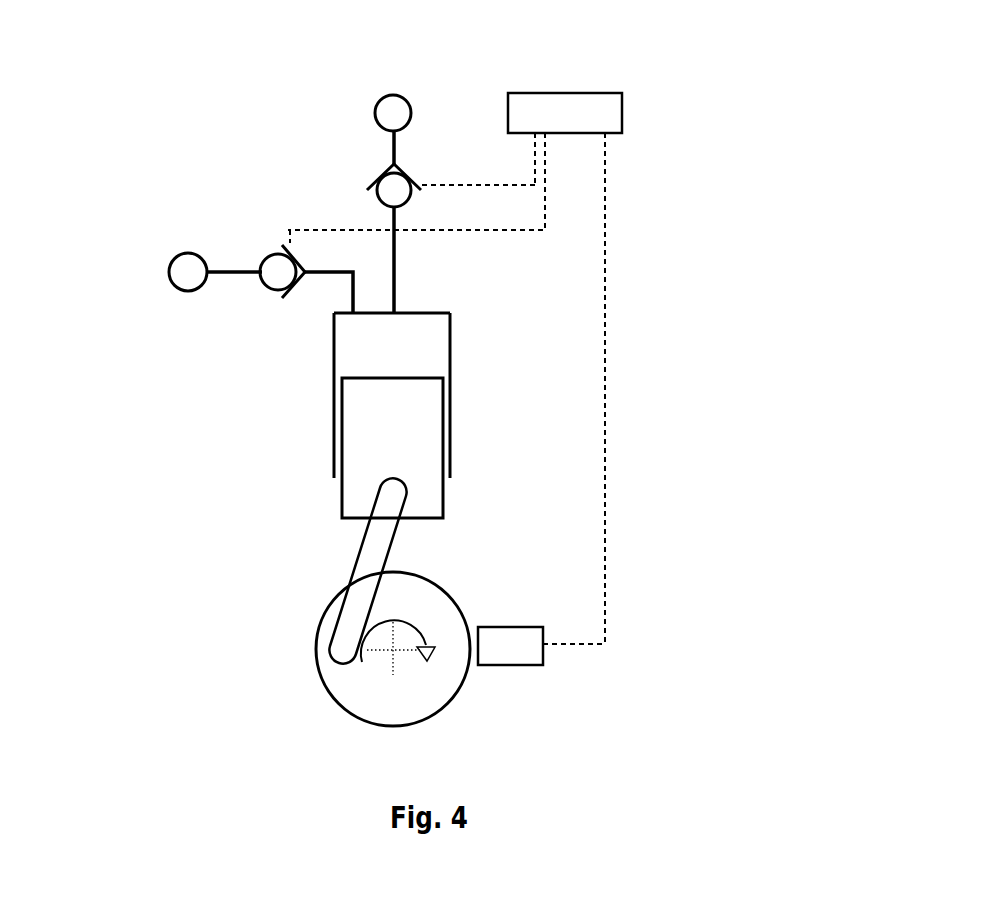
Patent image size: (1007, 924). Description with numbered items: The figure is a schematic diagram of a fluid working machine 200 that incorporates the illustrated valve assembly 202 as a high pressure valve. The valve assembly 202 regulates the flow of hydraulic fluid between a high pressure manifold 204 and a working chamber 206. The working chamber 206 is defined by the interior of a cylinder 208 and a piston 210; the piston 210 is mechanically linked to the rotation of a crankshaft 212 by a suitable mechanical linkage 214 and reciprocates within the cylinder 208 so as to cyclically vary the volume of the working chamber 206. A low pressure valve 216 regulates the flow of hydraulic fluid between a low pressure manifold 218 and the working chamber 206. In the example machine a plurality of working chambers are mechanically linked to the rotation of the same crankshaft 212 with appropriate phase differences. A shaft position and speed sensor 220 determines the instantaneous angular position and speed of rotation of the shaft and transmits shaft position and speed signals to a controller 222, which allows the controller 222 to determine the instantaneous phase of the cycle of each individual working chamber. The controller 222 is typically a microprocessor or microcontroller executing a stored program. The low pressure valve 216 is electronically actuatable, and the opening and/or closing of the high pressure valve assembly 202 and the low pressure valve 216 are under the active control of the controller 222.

The fluid working machine 200 is at (103, 85).
The valve assembly 202 is at (265, 258).
The high pressure manifold 204 is at (187, 272).
The working chamber 206 is at (405, 338).
The cylinder 208 is at (333, 340).
The piston 210 is at (358, 440).
The crankshaft 212 is at (342, 675).
The mechanical linkage 214 is at (363, 553).
The low pressure valve 216 is at (377, 182).
The low pressure manifold 218 is at (397, 110).
The shaft position and speed sensor 220 is at (503, 665).
The controller 222 is at (622, 93).